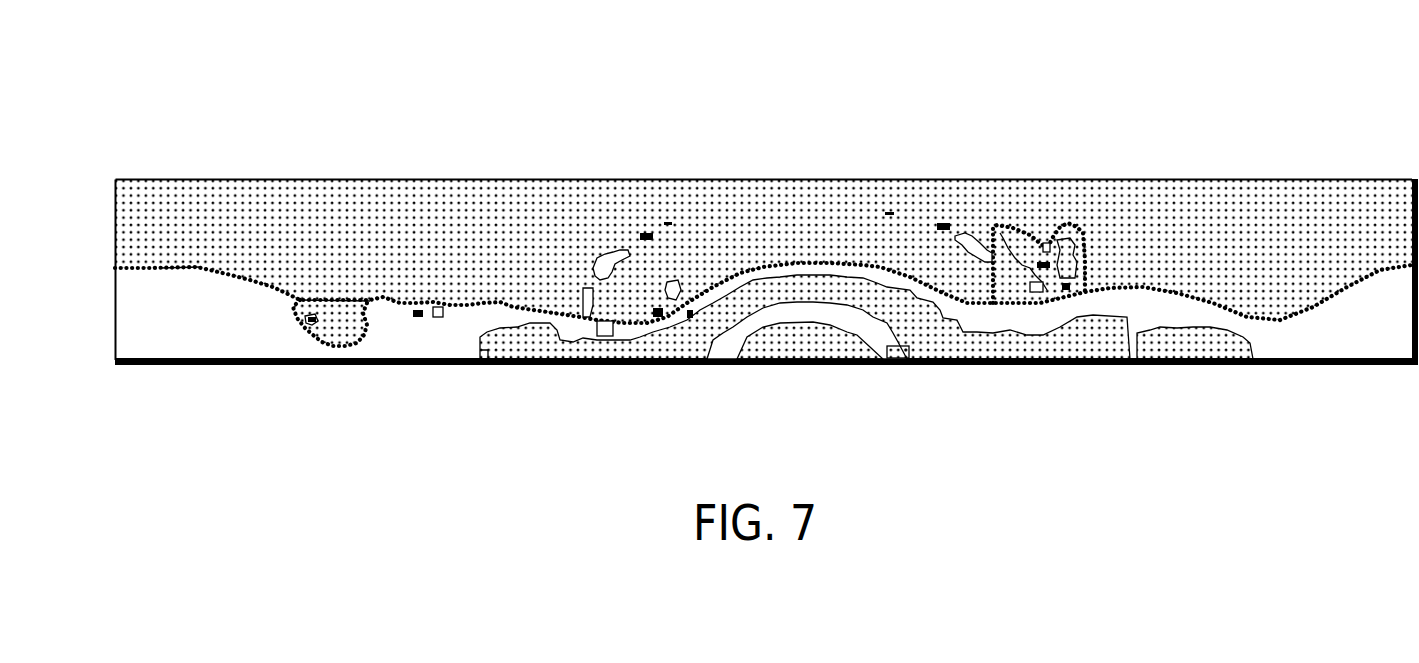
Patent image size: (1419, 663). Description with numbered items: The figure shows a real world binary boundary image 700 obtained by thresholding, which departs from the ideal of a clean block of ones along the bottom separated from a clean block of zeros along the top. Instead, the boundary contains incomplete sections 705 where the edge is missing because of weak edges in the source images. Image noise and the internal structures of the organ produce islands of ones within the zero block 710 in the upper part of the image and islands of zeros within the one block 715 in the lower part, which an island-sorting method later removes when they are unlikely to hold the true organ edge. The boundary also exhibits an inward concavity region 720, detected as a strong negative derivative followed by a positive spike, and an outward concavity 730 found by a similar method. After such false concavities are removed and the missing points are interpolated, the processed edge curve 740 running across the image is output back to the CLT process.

The real world image 700 is at (1128, 80).
The incomplete sections 705 is at (541, 369).
The zero block 710 is at (597, 249).
The one block 715 is at (1179, 368).
The inward concavity region 720 is at (336, 352).
The outward concavity 730 is at (975, 222).
The processed edge curve 740 is at (343, 286).